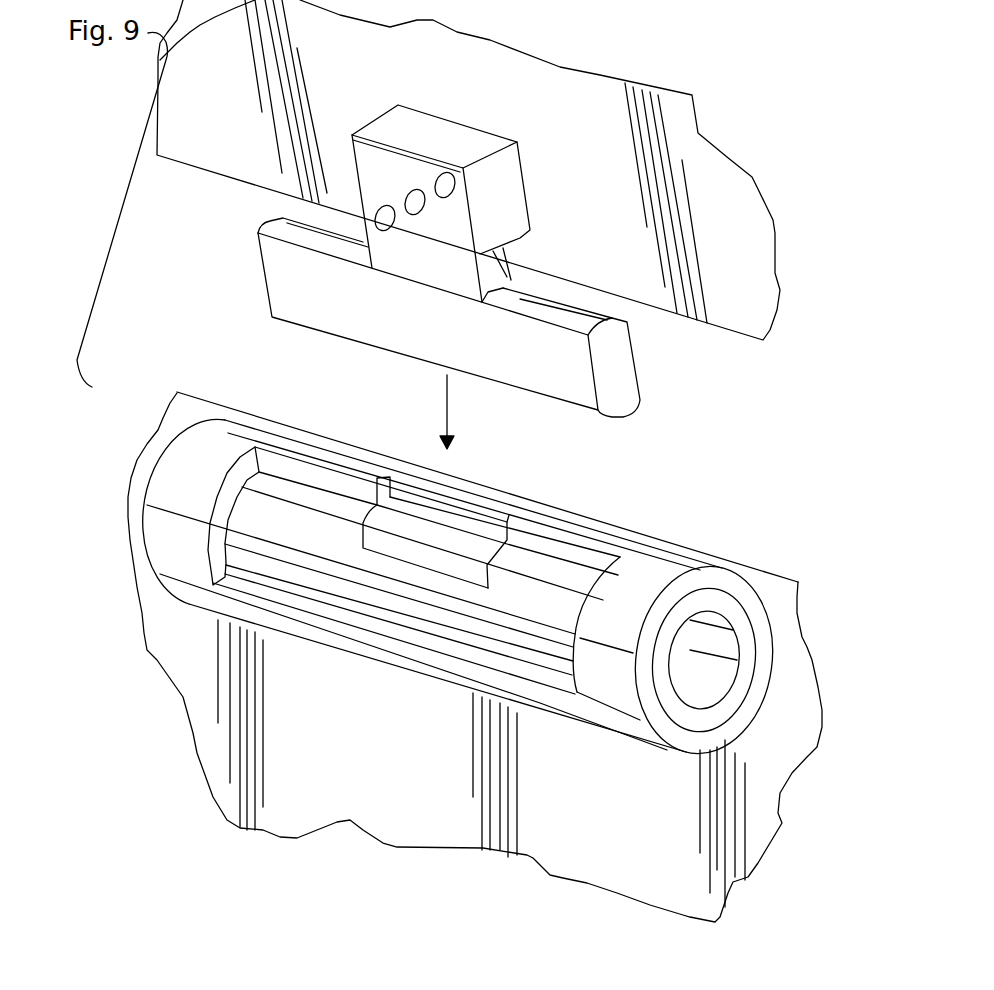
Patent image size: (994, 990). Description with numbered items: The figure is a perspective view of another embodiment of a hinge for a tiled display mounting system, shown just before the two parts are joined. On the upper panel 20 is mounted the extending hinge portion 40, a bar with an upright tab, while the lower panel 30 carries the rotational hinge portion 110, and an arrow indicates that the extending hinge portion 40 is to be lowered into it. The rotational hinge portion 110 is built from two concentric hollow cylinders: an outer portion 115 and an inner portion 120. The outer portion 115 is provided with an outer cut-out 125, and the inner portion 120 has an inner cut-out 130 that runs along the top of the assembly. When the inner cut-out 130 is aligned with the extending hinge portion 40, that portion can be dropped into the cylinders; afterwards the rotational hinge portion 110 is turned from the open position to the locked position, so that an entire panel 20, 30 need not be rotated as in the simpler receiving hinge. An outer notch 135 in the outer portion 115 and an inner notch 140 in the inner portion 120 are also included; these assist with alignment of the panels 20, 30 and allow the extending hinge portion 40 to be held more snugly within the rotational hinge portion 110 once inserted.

The panel 20 is at (517, 88).
The extending hinge portion 40 is at (439, 268).
The panel 30 is at (406, 766).
The rotational hinge portion 110 is at (752, 577).
The outer portion 115 is at (665, 543).
The inner portion 120 is at (230, 495).
The inner cut-out 130 is at (292, 478).
The outer notch 135 is at (482, 500).
The outer cut-out 125 is at (550, 528).
The inner notch 140 is at (380, 527).